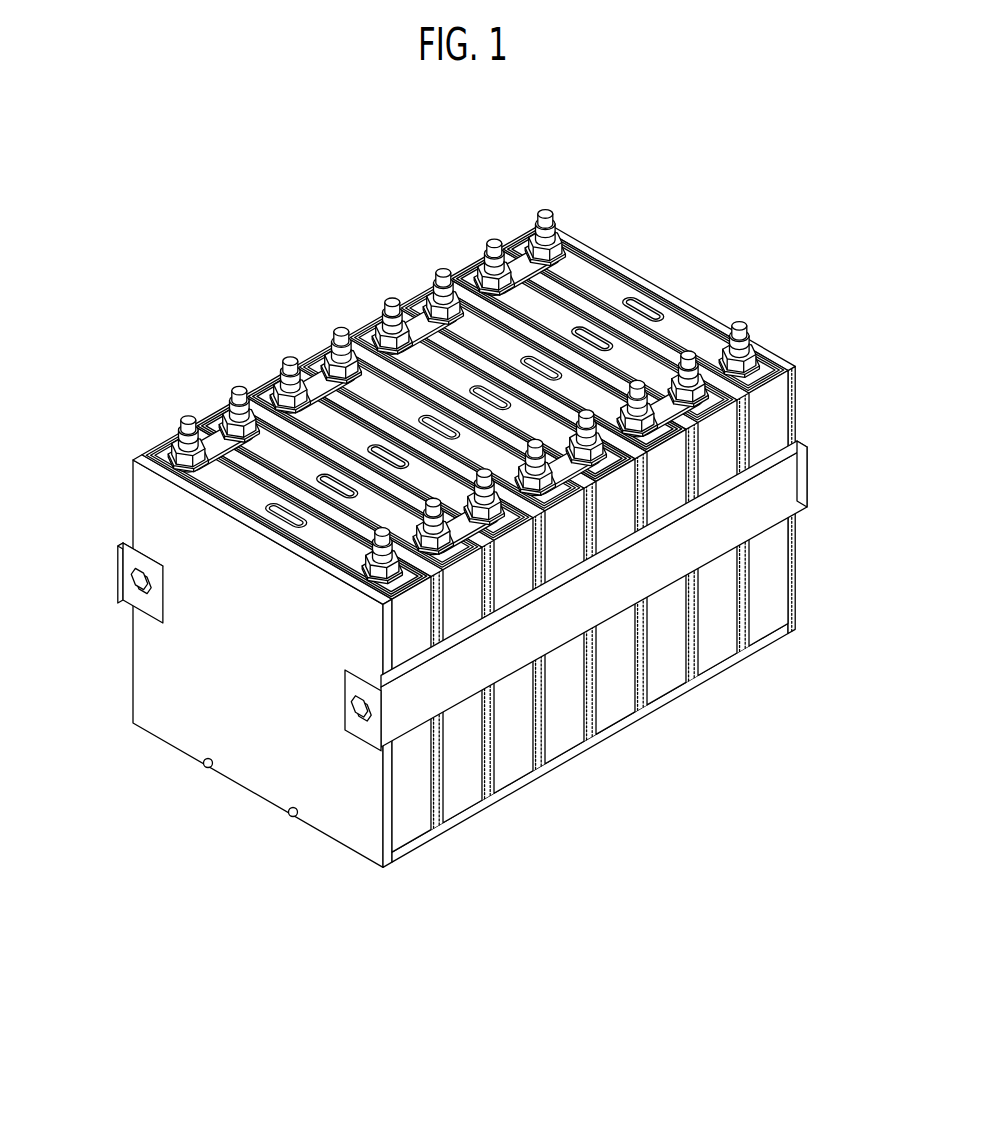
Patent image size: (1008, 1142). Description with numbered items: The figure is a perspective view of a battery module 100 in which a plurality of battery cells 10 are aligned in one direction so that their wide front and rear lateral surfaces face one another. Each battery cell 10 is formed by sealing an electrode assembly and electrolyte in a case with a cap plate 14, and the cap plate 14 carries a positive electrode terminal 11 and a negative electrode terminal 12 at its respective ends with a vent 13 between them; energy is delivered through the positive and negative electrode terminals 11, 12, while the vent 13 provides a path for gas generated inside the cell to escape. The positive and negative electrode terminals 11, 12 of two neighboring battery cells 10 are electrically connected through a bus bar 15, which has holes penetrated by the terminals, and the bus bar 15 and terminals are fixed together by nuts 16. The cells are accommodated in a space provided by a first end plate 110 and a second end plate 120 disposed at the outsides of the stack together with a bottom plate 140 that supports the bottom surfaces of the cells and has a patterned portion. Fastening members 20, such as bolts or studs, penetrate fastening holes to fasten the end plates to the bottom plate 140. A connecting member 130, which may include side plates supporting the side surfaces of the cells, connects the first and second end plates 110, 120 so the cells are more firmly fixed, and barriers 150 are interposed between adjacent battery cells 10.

The battery module 100 is at (250, 194).
The battery cell 10 is at (725, 586).
The positive electrode terminal 11 is at (547, 212).
The negative electrode terminal 12 is at (739, 324).
The vent 13 is at (650, 298).
The cap plate 14 is at (598, 267).
The bus bar 15 is at (216, 429).
The nut 16 is at (281, 378).
The fastening member 20 is at (290, 815).
The first end plate 110 is at (158, 669).
The second end plate 120 is at (807, 550).
The connecting member 130 is at (116, 579).
The bottom plate 140 is at (425, 849).
The barrier 150 is at (651, 675).